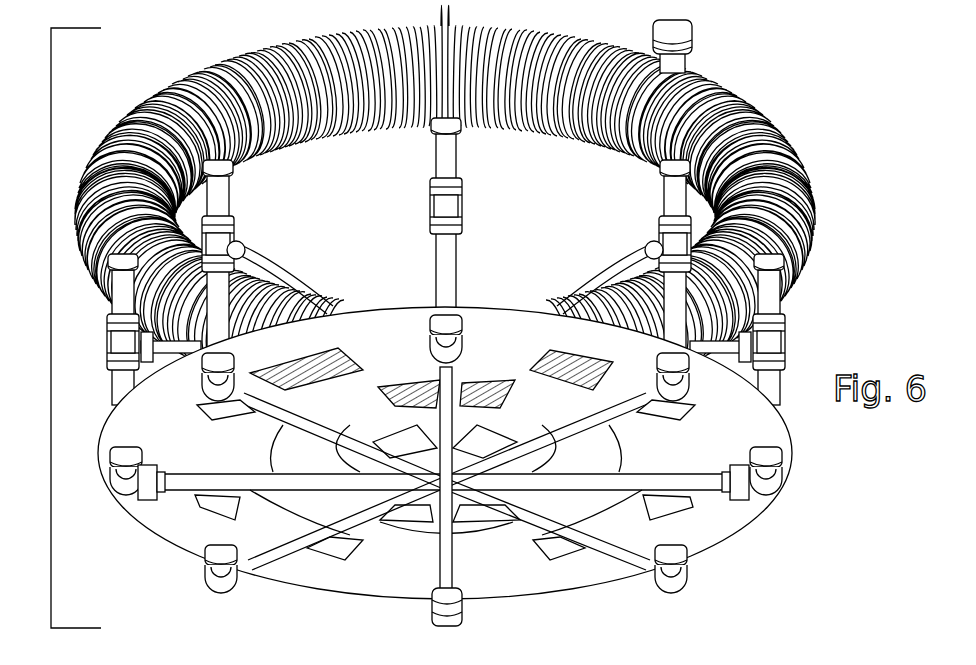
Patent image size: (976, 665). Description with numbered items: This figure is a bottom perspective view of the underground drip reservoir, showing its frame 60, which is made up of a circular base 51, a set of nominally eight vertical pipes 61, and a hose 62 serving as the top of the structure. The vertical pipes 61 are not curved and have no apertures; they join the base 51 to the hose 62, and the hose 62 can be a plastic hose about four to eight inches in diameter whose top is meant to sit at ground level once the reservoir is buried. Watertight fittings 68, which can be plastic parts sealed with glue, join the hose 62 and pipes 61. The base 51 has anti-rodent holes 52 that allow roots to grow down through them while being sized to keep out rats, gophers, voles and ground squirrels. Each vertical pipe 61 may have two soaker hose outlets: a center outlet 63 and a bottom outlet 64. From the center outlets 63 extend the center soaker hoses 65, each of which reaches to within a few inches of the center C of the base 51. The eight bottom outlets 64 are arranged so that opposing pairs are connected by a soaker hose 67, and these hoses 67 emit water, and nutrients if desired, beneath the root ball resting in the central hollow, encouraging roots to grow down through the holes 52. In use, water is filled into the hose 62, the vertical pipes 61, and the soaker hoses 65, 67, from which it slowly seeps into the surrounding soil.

The circular base 51 is at (715, 537).
The anti-rodent holes 52 is at (565, 552).
The frame 60 is at (51, 326).
The vertical pipes 61 is at (456, 264).
The hose 62 is at (445, 202).
The center soaker hose outlet 63 is at (458, 209).
The bottom soaker hose outlet 64 is at (455, 339).
The center soaker hose 65 is at (281, 274).
The soaker hose 67 is at (326, 430).
The watertight fittings 68 is at (434, 132).
The center of the base C is at (452, 490).